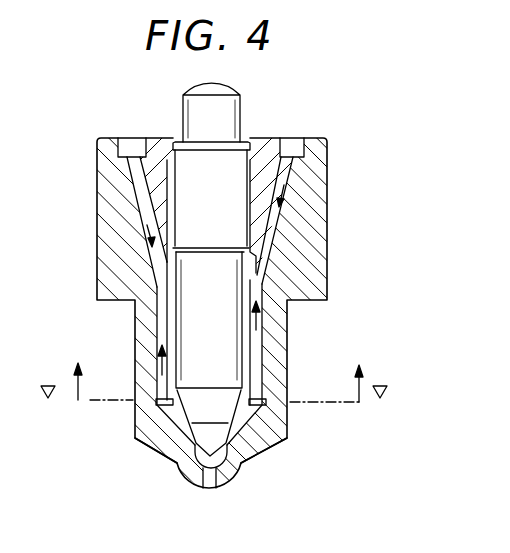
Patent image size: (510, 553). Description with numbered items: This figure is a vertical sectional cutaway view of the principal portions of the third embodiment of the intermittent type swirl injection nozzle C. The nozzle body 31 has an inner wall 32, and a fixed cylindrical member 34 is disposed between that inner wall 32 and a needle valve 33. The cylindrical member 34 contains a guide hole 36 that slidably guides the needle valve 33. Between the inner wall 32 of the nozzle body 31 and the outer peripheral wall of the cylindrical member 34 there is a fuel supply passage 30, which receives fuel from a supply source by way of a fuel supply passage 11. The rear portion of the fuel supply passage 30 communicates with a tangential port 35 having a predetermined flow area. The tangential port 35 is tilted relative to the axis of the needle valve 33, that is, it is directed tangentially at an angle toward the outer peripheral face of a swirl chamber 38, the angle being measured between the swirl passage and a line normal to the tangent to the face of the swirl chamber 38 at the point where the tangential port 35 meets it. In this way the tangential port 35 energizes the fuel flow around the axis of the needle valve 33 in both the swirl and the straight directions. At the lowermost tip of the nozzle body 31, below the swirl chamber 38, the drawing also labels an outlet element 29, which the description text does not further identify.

The fuel supply passage 11 is at (140, 197).
The discharge orifice 29 is at (210, 478).
The fuel supply passage 30 is at (155, 268).
The nozzle body 31 is at (312, 187).
The inner wall 32 is at (268, 224).
The needle valve 33 is at (207, 262).
The fixed cylindrical member 34 is at (170, 320).
The tangential port 35 is at (157, 404).
The guide hole 36 is at (246, 348).
The swirl chamber 38 is at (268, 449).
The intermittent type swirl injection nozzle C is at (340, 217).